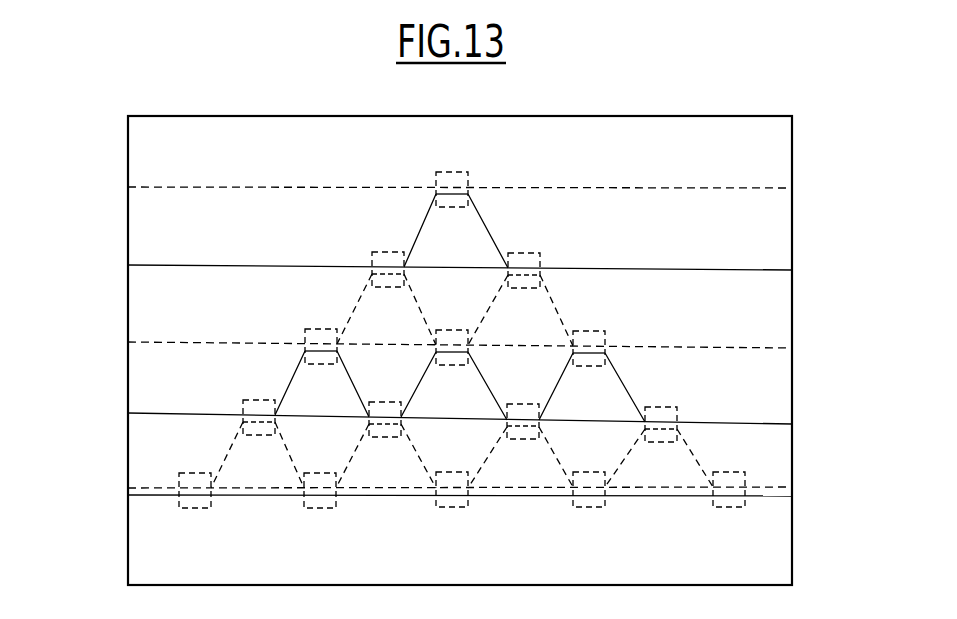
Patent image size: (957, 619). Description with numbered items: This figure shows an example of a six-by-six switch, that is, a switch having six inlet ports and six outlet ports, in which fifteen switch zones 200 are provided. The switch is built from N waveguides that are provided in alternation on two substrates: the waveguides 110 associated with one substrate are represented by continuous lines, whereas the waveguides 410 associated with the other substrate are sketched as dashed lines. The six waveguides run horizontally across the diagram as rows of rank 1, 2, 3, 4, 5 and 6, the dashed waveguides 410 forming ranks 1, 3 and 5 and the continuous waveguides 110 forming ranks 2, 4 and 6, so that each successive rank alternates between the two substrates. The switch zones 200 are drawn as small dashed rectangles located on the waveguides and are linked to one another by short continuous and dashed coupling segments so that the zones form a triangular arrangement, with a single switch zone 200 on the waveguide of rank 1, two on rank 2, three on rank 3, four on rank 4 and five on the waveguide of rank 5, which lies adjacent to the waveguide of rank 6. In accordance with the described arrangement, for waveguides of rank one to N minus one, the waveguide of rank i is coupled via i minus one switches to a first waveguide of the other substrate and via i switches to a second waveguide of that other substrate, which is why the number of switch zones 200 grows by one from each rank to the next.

The switch zone 200 is at (447, 166).
The waveguide 410 is at (443, 307).
The waveguide 110 is at (442, 377).
The waveguide of rank 1 is at (121, 186).
The waveguide of rank 2 is at (121, 265).
The waveguide of rank 3 is at (829, 343).
The waveguide of rank 4 is at (121, 413).
The waveguide of rank 5 is at (121, 488).
The waveguide of rank 6 is at (831, 513).